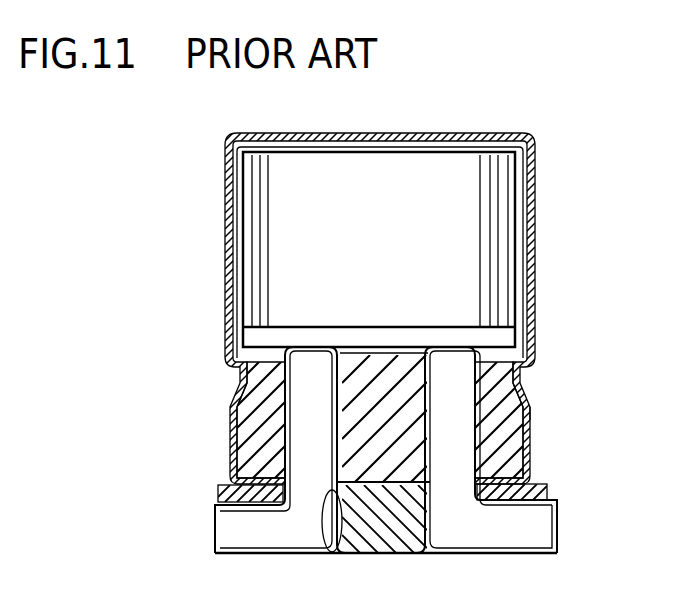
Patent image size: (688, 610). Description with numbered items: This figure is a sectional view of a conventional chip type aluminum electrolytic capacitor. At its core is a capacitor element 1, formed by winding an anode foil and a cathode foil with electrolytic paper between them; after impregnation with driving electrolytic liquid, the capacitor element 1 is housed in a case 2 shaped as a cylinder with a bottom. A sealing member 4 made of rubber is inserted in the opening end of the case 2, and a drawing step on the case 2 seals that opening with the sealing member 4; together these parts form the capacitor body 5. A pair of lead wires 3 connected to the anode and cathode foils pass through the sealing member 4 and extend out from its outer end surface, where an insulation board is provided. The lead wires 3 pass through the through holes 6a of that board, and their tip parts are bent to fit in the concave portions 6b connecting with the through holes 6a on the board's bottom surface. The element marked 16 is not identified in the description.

The capacitor element 1 is at (277, 190).
The case 2 is at (226, 236).
The lead wires 3 is at (300, 388).
The sealing member 4 is at (253, 447).
The capacitor body 5 is at (543, 423).
The through holes 6a is at (332, 555).
The concave portions 6b is at (218, 497).
The resin portion 16 is at (411, 555).